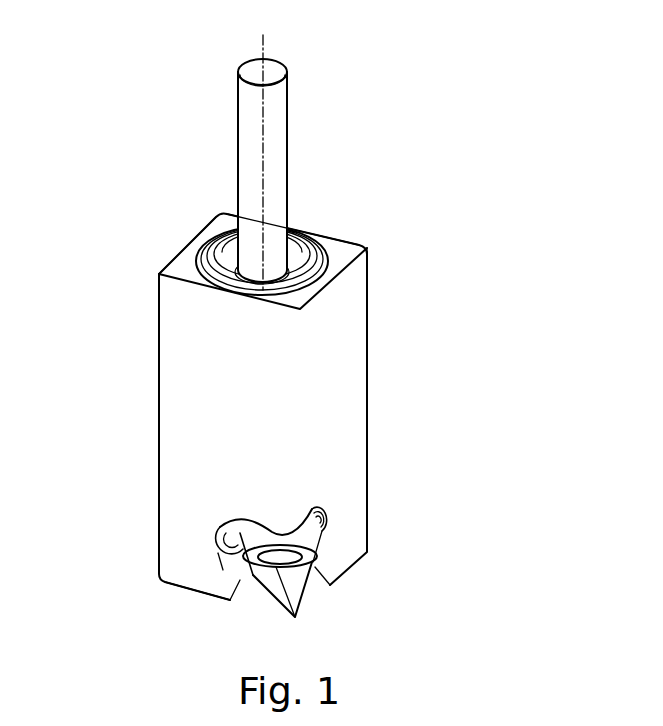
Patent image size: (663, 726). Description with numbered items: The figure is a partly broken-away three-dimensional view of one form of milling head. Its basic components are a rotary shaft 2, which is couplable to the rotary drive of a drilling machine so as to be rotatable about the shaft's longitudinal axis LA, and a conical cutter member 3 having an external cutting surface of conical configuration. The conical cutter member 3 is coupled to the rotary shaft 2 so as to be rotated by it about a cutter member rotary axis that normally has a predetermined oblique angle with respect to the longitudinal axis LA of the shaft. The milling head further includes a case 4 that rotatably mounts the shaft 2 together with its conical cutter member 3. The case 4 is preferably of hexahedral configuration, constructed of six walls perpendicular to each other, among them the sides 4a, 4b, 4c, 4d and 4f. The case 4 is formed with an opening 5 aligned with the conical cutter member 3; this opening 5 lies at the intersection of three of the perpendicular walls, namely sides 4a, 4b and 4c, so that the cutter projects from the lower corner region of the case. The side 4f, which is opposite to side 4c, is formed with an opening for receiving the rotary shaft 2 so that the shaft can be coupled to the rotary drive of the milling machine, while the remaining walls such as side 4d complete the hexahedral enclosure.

The longitudinal axis LA is at (264, 103).
The rotary shaft 2 is at (273, 148).
The conical cutter member 3 is at (305, 582).
The case 4 is at (330, 345).
The side of case 4a is at (175, 492).
The side of case 4b is at (354, 408).
The side of case 4c is at (182, 589).
The side of case 4d is at (172, 270).
The side of case 4f is at (337, 240).
The opening 5 is at (233, 585).